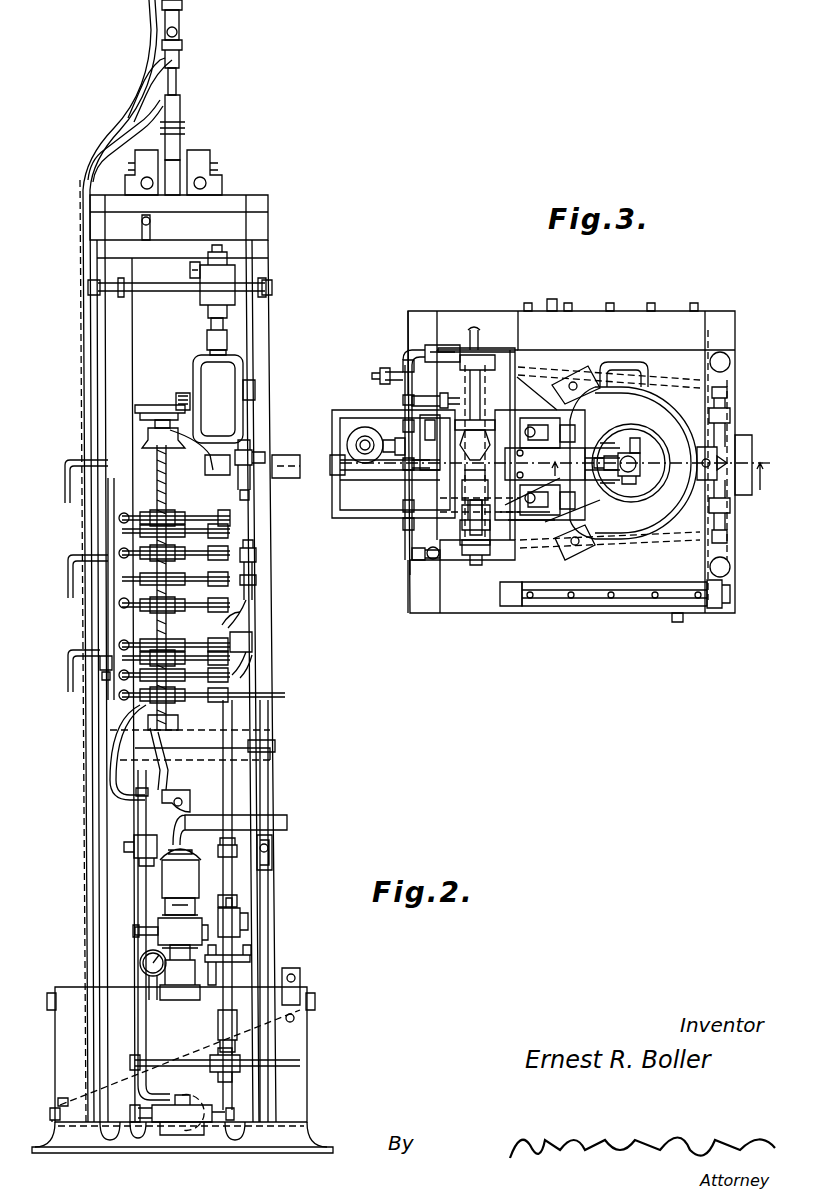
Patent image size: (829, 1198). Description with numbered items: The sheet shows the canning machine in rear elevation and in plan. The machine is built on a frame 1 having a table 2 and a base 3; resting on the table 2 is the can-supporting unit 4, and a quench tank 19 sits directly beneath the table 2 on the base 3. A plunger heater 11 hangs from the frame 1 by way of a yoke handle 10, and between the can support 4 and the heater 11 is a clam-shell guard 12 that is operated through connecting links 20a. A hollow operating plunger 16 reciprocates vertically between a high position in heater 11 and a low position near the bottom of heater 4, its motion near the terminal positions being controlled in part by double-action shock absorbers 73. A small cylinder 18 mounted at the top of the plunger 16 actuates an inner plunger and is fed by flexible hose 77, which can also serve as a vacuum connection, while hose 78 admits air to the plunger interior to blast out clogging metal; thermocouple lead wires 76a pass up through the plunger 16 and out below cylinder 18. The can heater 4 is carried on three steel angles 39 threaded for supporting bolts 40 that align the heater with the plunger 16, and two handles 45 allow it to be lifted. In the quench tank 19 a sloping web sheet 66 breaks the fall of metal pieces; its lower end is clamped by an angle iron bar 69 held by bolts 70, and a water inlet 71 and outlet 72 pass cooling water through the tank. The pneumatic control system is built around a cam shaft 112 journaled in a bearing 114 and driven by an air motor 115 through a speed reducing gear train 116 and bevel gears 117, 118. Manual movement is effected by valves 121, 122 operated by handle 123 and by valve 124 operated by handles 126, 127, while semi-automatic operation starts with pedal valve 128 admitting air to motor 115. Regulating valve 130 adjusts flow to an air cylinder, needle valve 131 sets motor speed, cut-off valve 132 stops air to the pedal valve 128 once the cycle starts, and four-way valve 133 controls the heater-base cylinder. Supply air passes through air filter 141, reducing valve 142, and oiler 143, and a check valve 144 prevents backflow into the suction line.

In FIG. 2, the frame 1 is at (98, 796).
In FIG. 3, the table 2 is at (623, 350).
In FIG. 2, the base 3 is at (293, 1125).
In FIG. 3, the base 3 is at (408, 320).
In FIG. 3, the can-supporting unit 4 is at (660, 524).
In FIG. 3, the yoke handle 10 is at (632, 426).
In FIG. 3, the plunger heater 11 is at (640, 494).
In FIG. 3, the clam-shell guard 12 is at (558, 524).
In FIG. 2, the hollow operating plunger 16 is at (180, 95).
In FIG. 2, the small cylinder 18 is at (182, 24).
In FIG. 3, the quench tank 19 is at (705, 328).
In FIG. 3, the connecting links 20a is at (412, 476).
In FIG. 3, the steel angles 39 is at (595, 580).
In FIG. 3, the supporting bolts 40 is at (583, 545).
In FIG. 3, the handles 45 is at (645, 372).
In FIG. 2, the sloping web sheet 66 is at (214, 1043).
In FIG. 2, the angle iron bar 69 is at (58, 1100).
In FIG. 2, the bolts 70 is at (50, 1112).
In FIG. 3, the bolts 70 is at (695, 301).
In FIG. 2, the water inlet 71 is at (48, 1001).
In FIG. 2, the water outlet 72 is at (315, 1001).
In FIG. 2, the double-action shock absorbers 73 is at (215, 148).
In FIG. 3, the double-action shock absorbers 73 is at (545, 435).
In FIG. 2, the thermocouple lead wires 76a is at (140, 80).
In FIG. 2, the flexible hose 77 is at (150, 31).
In FIG. 2, the hose 78 is at (122, 124).
In FIG. 2, the shaft 112 is at (156, 622).
In FIG. 2, the bearing 114 is at (148, 434).
In FIG. 2, the air motor 115 is at (200, 292).
In FIG. 2, the speed reducing gear train 116 is at (205, 358).
In FIG. 2, the bevel gear 117 is at (182, 393).
In FIG. 2, the bevel gear 118 is at (140, 406).
In FIG. 2, the valve 121 is at (178, 416).
In FIG. 3, the valve 121 is at (430, 538).
In FIG. 2, the valve 122 is at (258, 460).
In FIG. 3, the valve 122 is at (470, 560).
In FIG. 2, the handle 123 is at (65, 486).
In FIG. 2, the valve 124 is at (256, 552).
In FIG. 2, the handle 126 is at (68, 576).
In FIG. 2, the handle 127 is at (68, 662).
In FIG. 2, the pedal valve 128 is at (182, 1102).
In FIG. 2, the regulating valve 130 is at (128, 849).
In FIG. 2, the needle valve 131 is at (100, 670).
In FIG. 2, the air-actuated air cut-off valve 132 is at (300, 1059).
In FIG. 2, the air-actuated four-way valve 133 is at (130, 736).
In FIG. 2, the air filter 141 is at (196, 893).
In FIG. 2, the reducing valve 142 is at (196, 940).
In FIG. 2, the oiler 143 is at (240, 918).
In FIG. 2, the check valve 144 is at (252, 638).